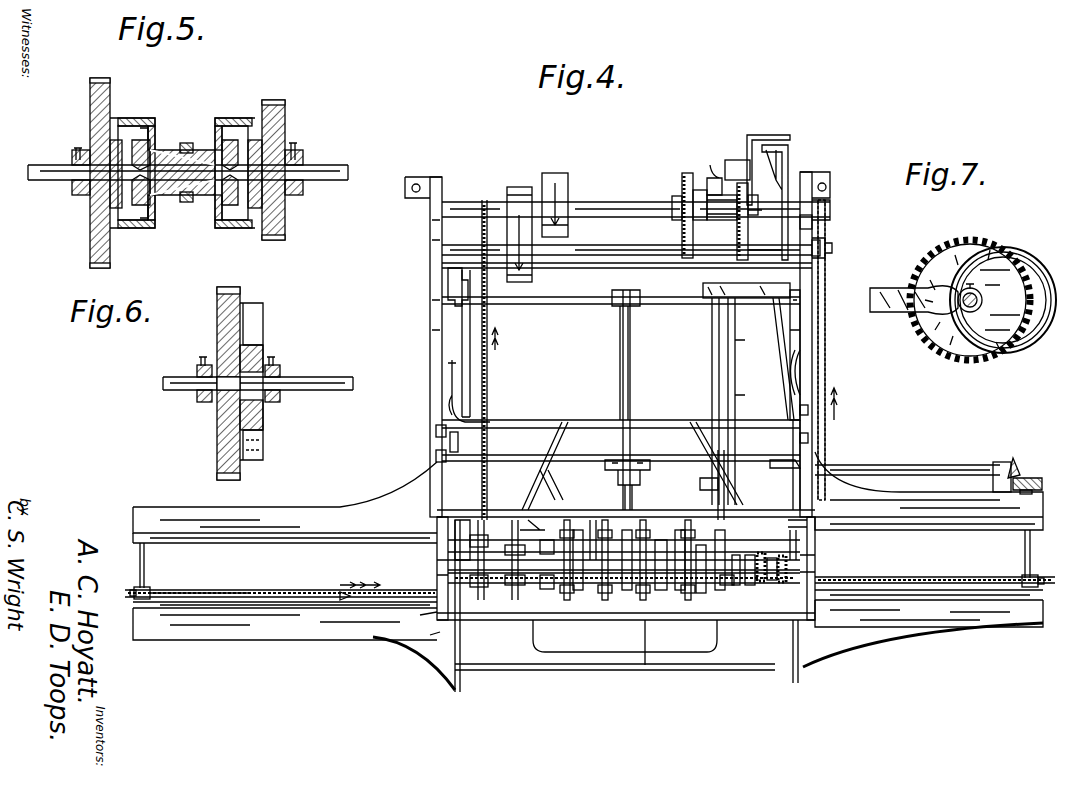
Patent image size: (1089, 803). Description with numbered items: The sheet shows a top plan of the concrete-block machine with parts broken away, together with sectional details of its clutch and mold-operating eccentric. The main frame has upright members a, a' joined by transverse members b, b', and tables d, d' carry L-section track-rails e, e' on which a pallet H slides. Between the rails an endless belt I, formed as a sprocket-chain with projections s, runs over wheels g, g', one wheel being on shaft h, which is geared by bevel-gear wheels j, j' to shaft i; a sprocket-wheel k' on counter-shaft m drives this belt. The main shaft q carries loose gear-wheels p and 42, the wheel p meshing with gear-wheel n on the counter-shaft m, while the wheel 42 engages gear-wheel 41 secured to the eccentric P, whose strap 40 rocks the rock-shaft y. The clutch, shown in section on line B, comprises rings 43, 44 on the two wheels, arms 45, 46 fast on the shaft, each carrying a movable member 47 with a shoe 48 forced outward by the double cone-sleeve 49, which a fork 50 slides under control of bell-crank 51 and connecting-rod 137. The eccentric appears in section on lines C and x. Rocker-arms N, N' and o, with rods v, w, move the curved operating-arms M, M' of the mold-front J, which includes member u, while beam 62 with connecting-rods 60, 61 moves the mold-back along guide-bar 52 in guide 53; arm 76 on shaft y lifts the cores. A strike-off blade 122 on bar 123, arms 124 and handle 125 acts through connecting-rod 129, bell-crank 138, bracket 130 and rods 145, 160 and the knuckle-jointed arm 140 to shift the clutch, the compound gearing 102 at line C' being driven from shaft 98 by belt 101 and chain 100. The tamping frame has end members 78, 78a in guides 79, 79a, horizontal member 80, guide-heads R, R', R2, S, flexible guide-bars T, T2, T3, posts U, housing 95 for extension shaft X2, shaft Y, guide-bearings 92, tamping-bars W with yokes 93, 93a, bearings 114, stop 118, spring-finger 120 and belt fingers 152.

In FIG. 5, the main shaft q is at (327, 182).
In FIG. 4, the main shaft q is at (618, 204).
In FIG. 5, the gear-wheel p is at (92, 118).
In FIG. 4, the gear-wheel p is at (686, 174).
In FIG. 5, the ring 43 is at (135, 120).
In FIG. 5, the ring 44 is at (238, 120).
In FIG. 5, the arm 45 is at (130, 226).
In FIG. 5, the arm 46 is at (245, 228).
In FIG. 5, the movable member 47 is at (163, 196).
In FIG. 5, the shoe 48 is at (148, 215).
In FIG. 5, the double cone-sleeve 49 is at (200, 196).
In FIG. 4, the double cone-sleeve 49 is at (716, 218).
In FIG. 5, the fork 50 is at (186, 144).
In FIG. 4, the fork 50 is at (708, 185).
In FIG. 5, the gear-wheel 42 is at (288, 118).
In FIG. 4, the gear-wheel 42 is at (733, 172).
In FIG. 6, the counter-shaft m is at (172, 378).
In FIG. 7, the counter-shaft m is at (984, 300).
In FIG. 4, the counter-shaft m is at (596, 248).
In FIG. 6, the gear-wheel 41 is at (217, 433).
In FIG. 7, the gear-wheel 41 is at (937, 250).
In FIG. 4, the gear-wheel 41 is at (720, 280).
In FIG. 6, the strap 40 is at (263, 441).
In FIG. 7, the strap 40 is at (1018, 250).
In FIG. 4, the strap 40 is at (813, 226).
In FIG. 6, the eccentric P is at (265, 402).
In FIG. 7, the eccentric P is at (1013, 335).
In FIG. 7, the wheel g is at (914, 285).
In FIG. 4, the wheel g is at (135, 571).
In FIG. 4, the belt 101 is at (517, 186).
In FIG. 4, the guide-bar T is at (552, 178).
In FIG. 4, the bell-crank 51 is at (772, 135).
In FIG. 4, the connecting-rod 137 is at (792, 162).
In FIG. 4, the gear-wheel n is at (640, 262).
In FIG. 4, the section line x is at (805, 228).
In FIG. 4, the section line B is at (832, 209).
In FIG. 4, the section line C is at (842, 247).
In FIG. 4, the sprocket-wheel k' is at (832, 256).
In FIG. 4, the rotative shaft 98 is at (636, 292).
In FIG. 4, the arm 76 is at (623, 348).
In FIG. 4, the bracket 130 is at (706, 298).
In FIG. 4, the rod 160 is at (712, 360).
In FIG. 4, the connecting-rod 145 is at (735, 392).
In FIG. 4, the bell-crank 138 is at (800, 312).
In FIG. 4, the upright main member a is at (420, 347).
In FIG. 4, the upright main member a' is at (829, 344).
In FIG. 4, the rod v is at (826, 352).
In FIG. 4, the rod w is at (462, 338).
In FIG. 4, the rocker-arm N is at (444, 386).
In FIG. 4, the rocker-arm N' is at (833, 372).
In FIG. 4, the rocker-arm o is at (445, 288).
In FIG. 4, the rock-shaft y is at (562, 305).
In FIG. 4, the chain belt 100 is at (488, 378).
In FIG. 4, the bearing 114 is at (436, 436).
In FIG. 4, the arm 124 is at (440, 458).
In FIG. 4, the curved operating-arm M is at (467, 578).
In FIG. 4, the curved operating-arm M' is at (816, 654).
In FIG. 4, the beam 62 is at (575, 422).
In FIG. 4, the connecting-rod 60 is at (550, 438).
In FIG. 4, the connecting-rod 61 is at (695, 436).
In FIG. 4, the connecting-rod 129 is at (795, 436).
In FIG. 4, the knuckle-jointed arm 140 is at (775, 468).
In FIG. 4, the bar 123 is at (540, 485).
In FIG. 4, the yoke 93a is at (598, 520).
In FIG. 4, the strike-off blade 122 is at (722, 470).
In FIG. 4, the guide-bar 52 is at (625, 494).
In FIG. 4, the guide 53 is at (675, 480).
In FIG. 4, the guide-bar T3 is at (712, 478).
In FIG. 4, the extension shaft X2 is at (530, 525).
In FIG. 4, the guide-head R2 is at (550, 520).
In FIG. 4, the housing 95 is at (462, 520).
In FIG. 4, the transverse member b' is at (608, 502).
In FIG. 4, the transverse member b is at (626, 638).
In FIG. 4, the upright end member 78 is at (440, 566).
In FIG. 4, the upright end member 78a is at (800, 556).
In FIG. 4, the vertical guide 79 is at (437, 584).
In FIG. 4, the vertical guide 79a is at (862, 562).
In FIG. 4, the guide-head S is at (610, 600).
In FIG. 4, the projection s is at (320, 592).
In FIG. 4, the pallet H is at (598, 600).
In FIG. 4, the guide-head R is at (631, 594).
In FIG. 4, the rotative shaft Y is at (510, 600).
In FIG. 4, the mold-front J is at (520, 608).
In FIG. 4, the post U is at (530, 655).
In FIG. 4, the guide-bearing 92 is at (588, 610).
In FIG. 4, the traveling tamping-bar W is at (640, 610).
In FIG. 4, the handle 125 is at (650, 672).
In FIG. 4, the table d is at (712, 682).
In FIG. 4, the member u is at (672, 600).
In FIG. 4, the guide-bar T2 is at (688, 600).
In FIG. 4, the yoke 93 is at (725, 600).
In FIG. 4, the guide-head R' is at (728, 607).
In FIG. 4, the gear train 102 is at (745, 595).
In FIG. 4, the section line C' is at (839, 560).
In FIG. 4, the endless belt I is at (230, 591).
In FIG. 4, the finger 152 is at (345, 596).
In FIG. 4, the stop 118 is at (430, 618).
In FIG. 4, the spring-finger 120 is at (430, 640).
In FIG. 4, the horizontal member 80 is at (436, 662).
In FIG. 4, the rotative shaft i is at (920, 476).
In FIG. 4, the bevel-gear wheel j' is at (1009, 460).
In FIG. 4, the bevel-gear wheel j is at (1028, 473).
In FIG. 4, the rotative shaft h is at (1025, 548).
In FIG. 4, the wheel g' is at (1022, 570).